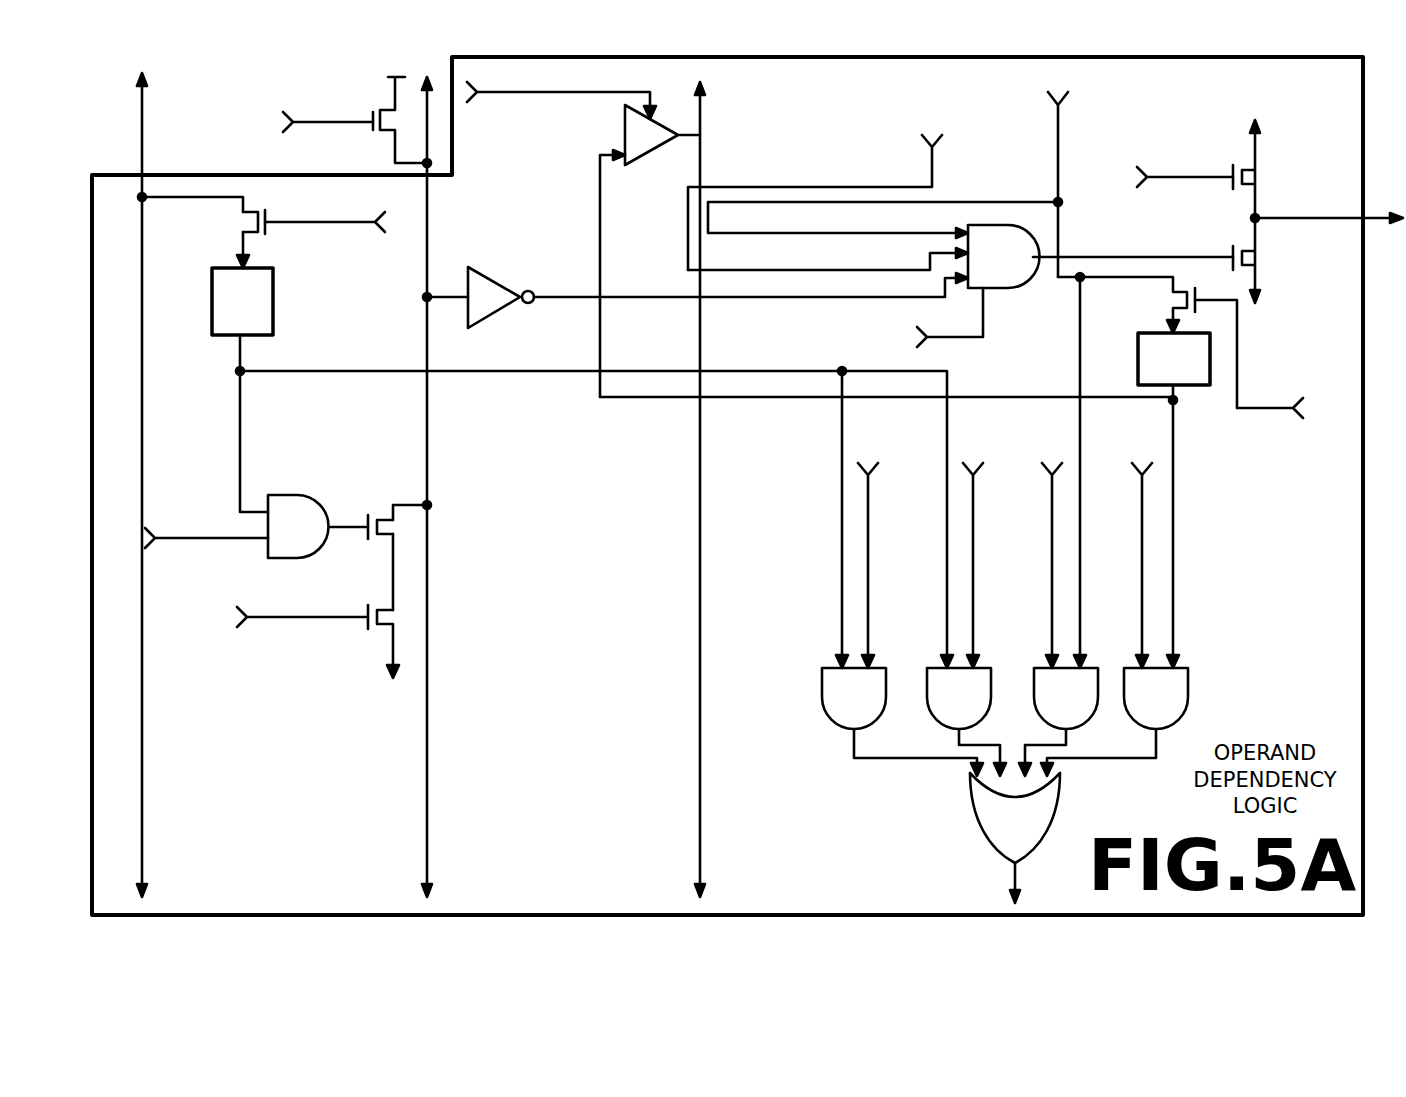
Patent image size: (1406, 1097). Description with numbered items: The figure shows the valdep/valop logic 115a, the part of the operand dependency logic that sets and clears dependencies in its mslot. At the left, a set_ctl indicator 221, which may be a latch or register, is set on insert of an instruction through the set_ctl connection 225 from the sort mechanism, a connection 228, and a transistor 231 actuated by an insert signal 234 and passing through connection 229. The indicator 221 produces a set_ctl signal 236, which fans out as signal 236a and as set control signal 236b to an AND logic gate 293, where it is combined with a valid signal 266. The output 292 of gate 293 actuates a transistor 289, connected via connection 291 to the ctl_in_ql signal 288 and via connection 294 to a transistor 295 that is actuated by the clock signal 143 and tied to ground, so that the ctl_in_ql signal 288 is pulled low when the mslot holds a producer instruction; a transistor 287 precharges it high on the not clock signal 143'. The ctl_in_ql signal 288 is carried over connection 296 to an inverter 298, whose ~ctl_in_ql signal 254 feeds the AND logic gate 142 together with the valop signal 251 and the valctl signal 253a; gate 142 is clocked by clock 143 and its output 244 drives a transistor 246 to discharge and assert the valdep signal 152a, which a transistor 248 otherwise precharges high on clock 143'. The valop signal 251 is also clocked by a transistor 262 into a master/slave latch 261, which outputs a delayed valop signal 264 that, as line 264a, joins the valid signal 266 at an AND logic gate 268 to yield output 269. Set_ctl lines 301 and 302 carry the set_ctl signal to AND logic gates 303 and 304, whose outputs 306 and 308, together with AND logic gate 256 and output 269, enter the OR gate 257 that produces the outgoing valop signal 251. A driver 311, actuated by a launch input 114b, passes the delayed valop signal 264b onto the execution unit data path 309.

The valdep/valop logic 115a is at (1365, 615).
The set_ctl connection 225 is at (144, 738).
The ctl_in_ql signal 288 is at (429, 712).
The execution unit data path 309 is at (697, 616).
The connection 228 is at (198, 197).
The transistor 231 is at (240, 222).
The conductor 229 is at (243, 243).
The insert signal 234 is at (318, 224).
The set_ctl indicator 221 is at (273, 298).
The set_ctl signal 236 is at (240, 350).
The conductor 236a is at (358, 371).
The set control signal 236b is at (242, 428).
The AND logic gate 293 is at (312, 498).
The valid signal 266 is at (192, 542).
The output 292 is at (350, 527).
The conductor 291 is at (427, 490).
The transistor 289 is at (396, 527).
The conductor 294 is at (396, 585).
The transistor 295 is at (396, 618).
The clock signal 143 is at (770, 478).
The not clock signal 143' is at (758, 159).
The transistor 287 is at (398, 120).
The connection 296 is at (450, 295).
The inverter 298 is at (520, 290).
The ~ctl_in_ql signal 254 is at (642, 298).
The LAUNCH signal 114b is at (592, 92).
The driver 311 is at (645, 160).
The delayed valop signal 264b is at (648, 397).
The valctl[0] signal 253a is at (940, 170).
The AND logic gate 142 is at (873, 245).
The valop signal 251 is at (1057, 140).
The output 244 is at (1196, 257).
The transistor 248 is at (1258, 177).
The valdep signal 152a is at (1306, 218).
The transistor 246 is at (1258, 258).
The transistor 262 is at (1172, 300).
The master/slave latch 261 is at (1138, 358).
The delayed valop signal 264 is at (1185, 400).
The conductor 264a is at (1175, 510).
The conductor 301 is at (842, 437).
The conductor 302 is at (948, 382).
The AND logic gate 303 is at (822, 718).
The AND logic gate 304 is at (927, 714).
The AND logic gate 256 is at (1095, 715).
The AND logic gate 268 is at (1190, 692).
The conductor 306 is at (858, 758).
The conductor 308 is at (962, 758).
The OR gate 257 is at (1062, 775).
The output 269 is at (1130, 758).